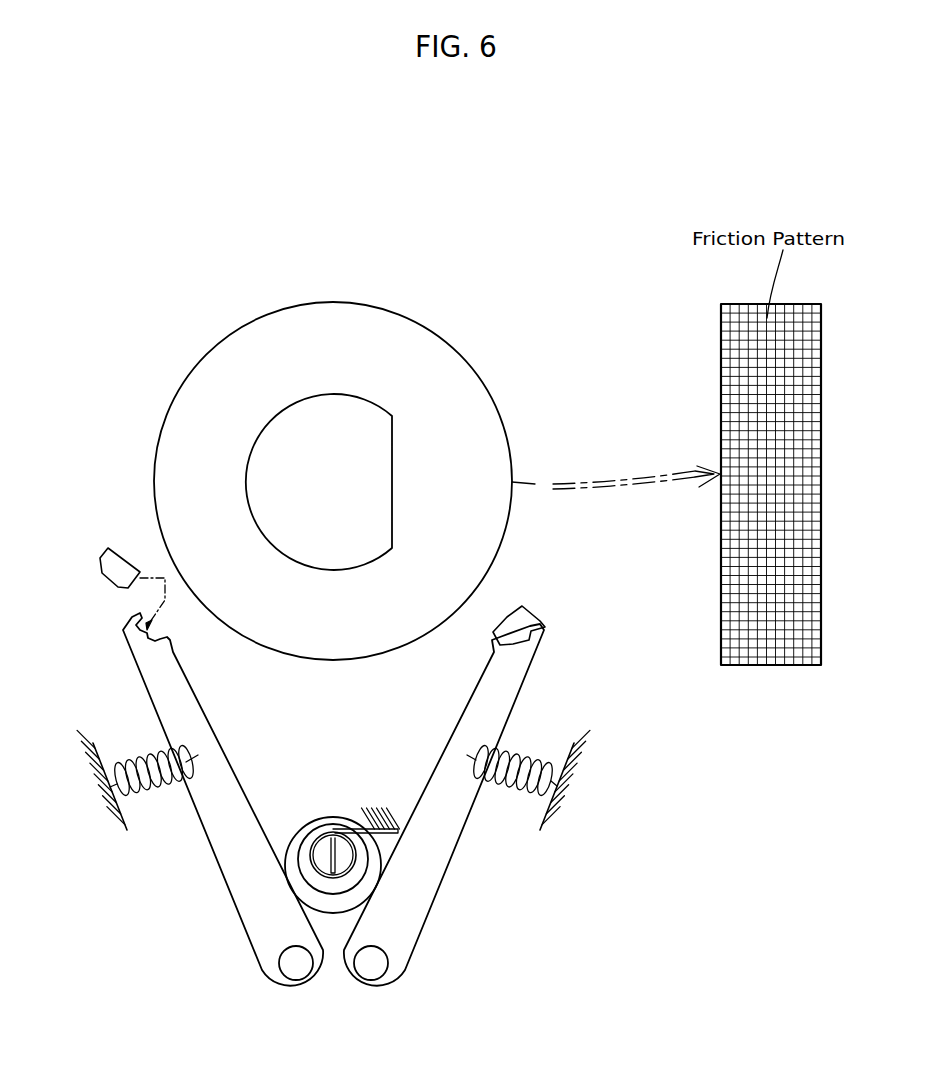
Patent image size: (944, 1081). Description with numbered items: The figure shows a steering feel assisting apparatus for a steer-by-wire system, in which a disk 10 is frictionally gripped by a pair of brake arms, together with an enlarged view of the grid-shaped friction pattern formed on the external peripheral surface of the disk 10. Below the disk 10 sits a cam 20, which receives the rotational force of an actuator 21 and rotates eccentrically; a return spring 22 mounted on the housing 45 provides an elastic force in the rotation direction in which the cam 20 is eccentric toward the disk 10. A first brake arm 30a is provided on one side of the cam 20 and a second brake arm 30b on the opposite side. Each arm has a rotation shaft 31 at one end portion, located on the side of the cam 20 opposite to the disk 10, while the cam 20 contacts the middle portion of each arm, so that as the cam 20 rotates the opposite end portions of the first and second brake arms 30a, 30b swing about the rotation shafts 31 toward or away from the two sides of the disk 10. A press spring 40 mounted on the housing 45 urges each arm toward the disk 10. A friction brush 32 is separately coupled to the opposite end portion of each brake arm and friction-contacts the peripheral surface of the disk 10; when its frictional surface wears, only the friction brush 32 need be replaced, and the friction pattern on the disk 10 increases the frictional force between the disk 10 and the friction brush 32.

The disk 10 is at (405, 335).
The cam 20 is at (363, 888).
The actuator 21 is at (303, 855).
The return spring 22 is at (380, 852).
The first brake arm 30a is at (257, 920).
The second brake arm 30b is at (407, 940).
The rotation shaft 31 is at (368, 970).
The friction brush 32 is at (108, 548).
The press spring 40 is at (133, 765).
The housing 45 is at (575, 800).